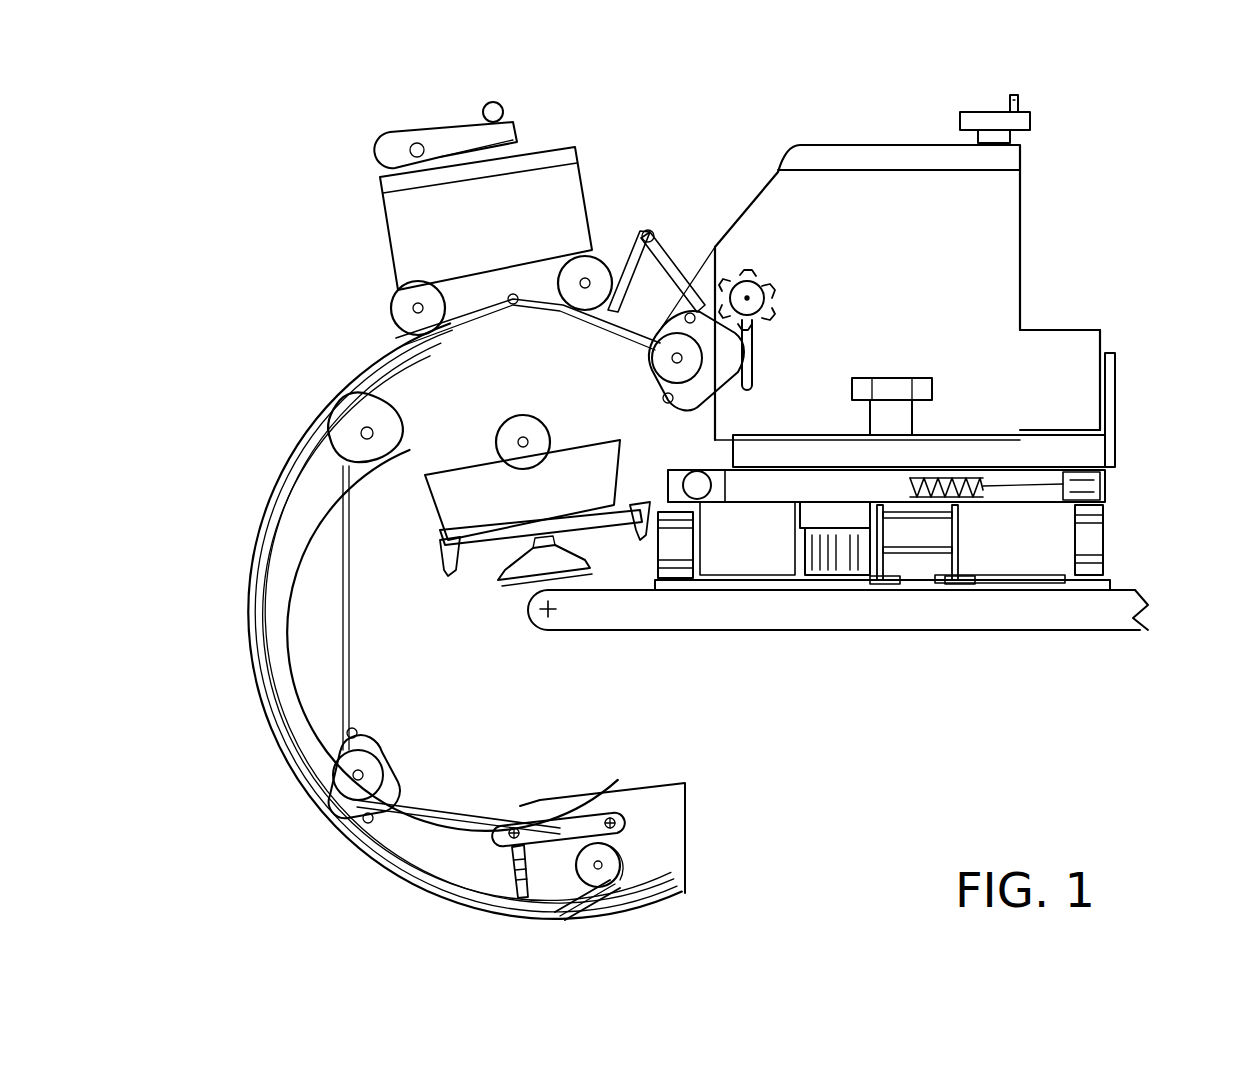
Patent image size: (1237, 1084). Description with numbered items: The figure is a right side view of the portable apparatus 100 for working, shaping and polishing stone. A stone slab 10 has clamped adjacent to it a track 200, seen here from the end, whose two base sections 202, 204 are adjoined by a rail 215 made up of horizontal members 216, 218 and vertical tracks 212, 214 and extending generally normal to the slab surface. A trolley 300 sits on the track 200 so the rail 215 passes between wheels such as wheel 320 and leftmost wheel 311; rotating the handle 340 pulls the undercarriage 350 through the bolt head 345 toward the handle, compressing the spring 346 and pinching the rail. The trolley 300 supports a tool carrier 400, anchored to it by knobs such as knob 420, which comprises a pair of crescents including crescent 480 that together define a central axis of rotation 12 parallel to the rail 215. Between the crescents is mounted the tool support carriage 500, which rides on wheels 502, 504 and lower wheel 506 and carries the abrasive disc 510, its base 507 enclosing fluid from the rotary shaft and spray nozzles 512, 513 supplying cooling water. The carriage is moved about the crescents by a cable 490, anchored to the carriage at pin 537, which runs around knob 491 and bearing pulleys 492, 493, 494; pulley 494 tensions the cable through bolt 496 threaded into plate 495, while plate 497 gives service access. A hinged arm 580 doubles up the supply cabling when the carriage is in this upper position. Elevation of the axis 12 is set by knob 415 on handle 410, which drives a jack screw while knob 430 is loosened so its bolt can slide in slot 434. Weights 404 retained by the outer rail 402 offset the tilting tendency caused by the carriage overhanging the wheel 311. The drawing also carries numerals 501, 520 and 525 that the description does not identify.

The stone slab 10 is at (1148, 628).
The central axis of rotation 12 is at (540, 612).
The portable apparatus 100 is at (1130, 150).
The track 200 is at (1108, 589).
The base section 202 is at (1040, 590).
The base section 204 is at (765, 590).
The vertical track 212 is at (955, 520).
The vertical track 214 is at (880, 580).
The rail 215 is at (909, 562).
The horizontal member 216 is at (905, 548).
The horizontal member 218 is at (895, 570).
The trolley 300 is at (1108, 488).
The leftmost wheel 311 is at (700, 525).
The wheel 320 is at (835, 575).
The handle 340 is at (752, 522).
The bolt head 345 is at (1085, 487).
The spring 346 is at (1090, 518).
The undercarriage 350 is at (1062, 580).
The tool carrier 400 is at (1024, 249).
The outer rail 402 is at (1117, 358).
The weights 404 is at (1078, 345).
The handle 410 is at (960, 120).
The knob 415 is at (1025, 102).
The knob 420 is at (880, 382).
The knob 430 is at (765, 288).
The slot 434 is at (755, 360).
The crescent 480 is at (680, 845).
The cable 490 is at (455, 768).
The knob 491 is at (330, 404).
The bearing pulley 492 is at (355, 802).
The bearing pulley 493 is at (652, 356).
The bearing pulley 494 is at (610, 876).
The plate 495 is at (566, 882).
The bolt 496 is at (560, 888).
The plate 497 is at (572, 820).
The tool support carriage 500 is at (462, 206).
The head housing 501 is at (590, 170).
The wheel 502 is at (400, 308).
The wheel 504 is at (570, 268).
The lower wheel 506 is at (447, 505).
The base 507 is at (440, 542).
The abrasive disc 510 is at (500, 585).
The spray nozzle 512 is at (445, 575).
The spray nozzle 513 is at (628, 458).
The handle 520 is at (395, 140).
The ball 525 is at (505, 112).
The pin 537 is at (511, 292).
The hinged arm 580 is at (655, 222).